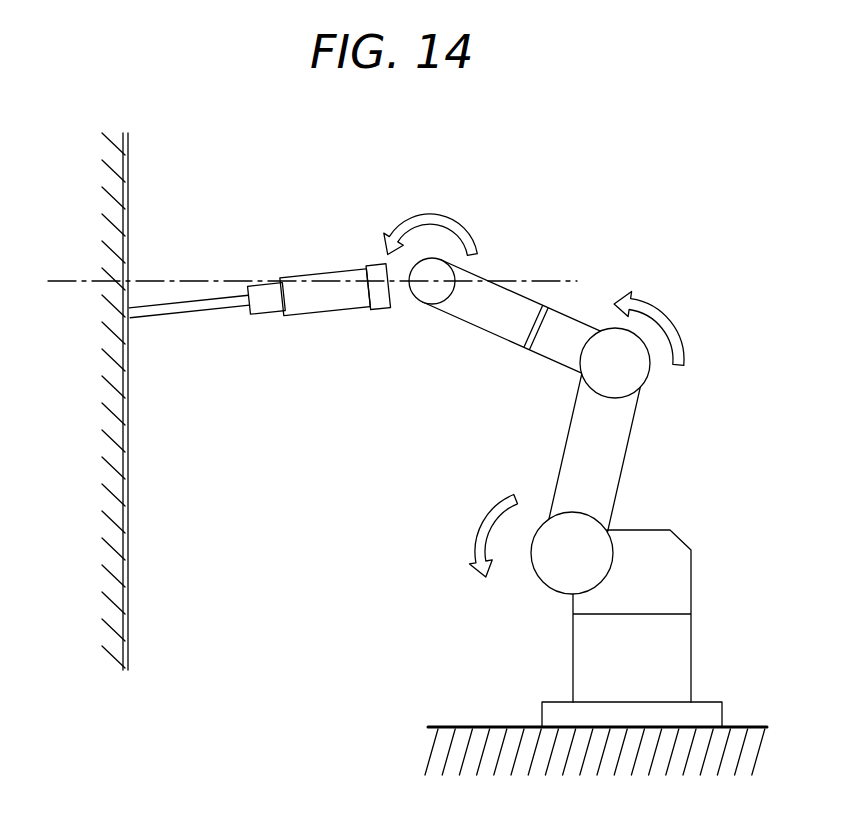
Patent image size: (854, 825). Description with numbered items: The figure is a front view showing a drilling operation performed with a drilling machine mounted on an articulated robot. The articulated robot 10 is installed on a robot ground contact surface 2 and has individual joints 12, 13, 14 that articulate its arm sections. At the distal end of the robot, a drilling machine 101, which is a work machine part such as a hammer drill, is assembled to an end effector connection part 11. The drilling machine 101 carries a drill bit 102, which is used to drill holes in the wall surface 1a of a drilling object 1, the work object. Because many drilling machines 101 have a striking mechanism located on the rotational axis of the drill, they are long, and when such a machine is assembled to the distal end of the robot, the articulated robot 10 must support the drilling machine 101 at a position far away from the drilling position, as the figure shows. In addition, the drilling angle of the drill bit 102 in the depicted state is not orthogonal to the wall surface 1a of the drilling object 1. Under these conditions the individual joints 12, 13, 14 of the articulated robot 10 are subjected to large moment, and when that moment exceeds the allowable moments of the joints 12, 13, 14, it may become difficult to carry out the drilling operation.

The drilling object 1 is at (108, 427).
The wall surface 1a is at (128, 484).
The robot ground contact surface 2 is at (455, 726).
The articulated robot 10 is at (580, 470).
The end effector connection part 11 is at (397, 297).
The joint 12 is at (555, 578).
The joint 13 is at (593, 373).
The joint 14 is at (430, 297).
The drilling machine 101 is at (327, 268).
The drill bit 102 is at (178, 300).